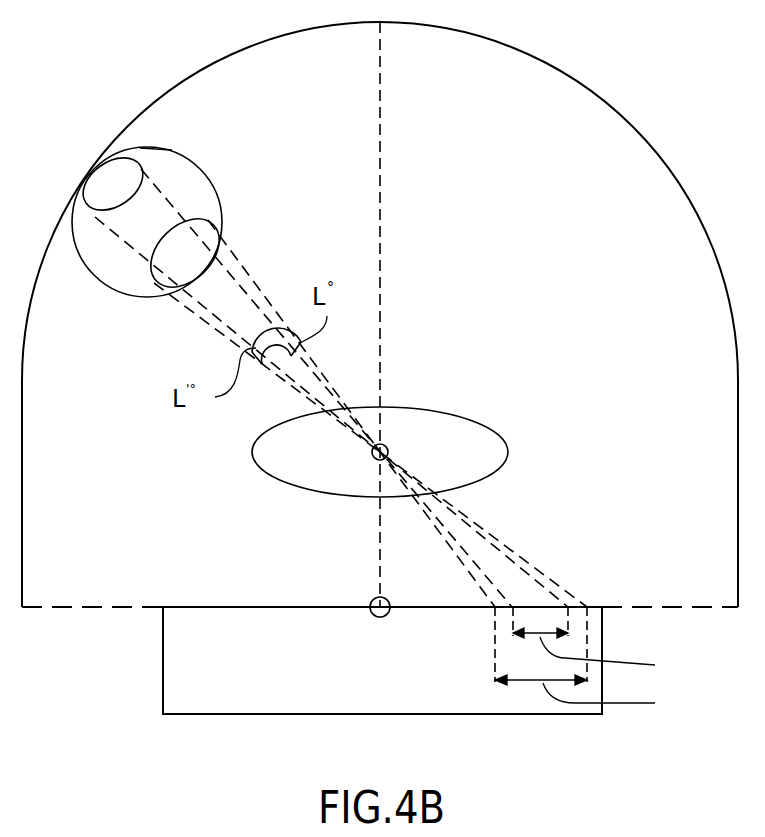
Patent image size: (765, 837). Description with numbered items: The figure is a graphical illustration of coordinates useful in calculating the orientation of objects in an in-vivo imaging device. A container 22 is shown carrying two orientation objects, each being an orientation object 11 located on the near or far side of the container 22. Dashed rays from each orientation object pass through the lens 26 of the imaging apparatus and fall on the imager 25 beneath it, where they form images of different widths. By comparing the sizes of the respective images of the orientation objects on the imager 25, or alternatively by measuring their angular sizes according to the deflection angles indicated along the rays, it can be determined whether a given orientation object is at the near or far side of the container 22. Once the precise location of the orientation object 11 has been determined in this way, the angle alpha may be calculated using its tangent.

The orientation object 11 is at (172, 150).
The container 22 is at (221, 195).
The imager 25 is at (305, 606).
The lens 26 is at (508, 452).